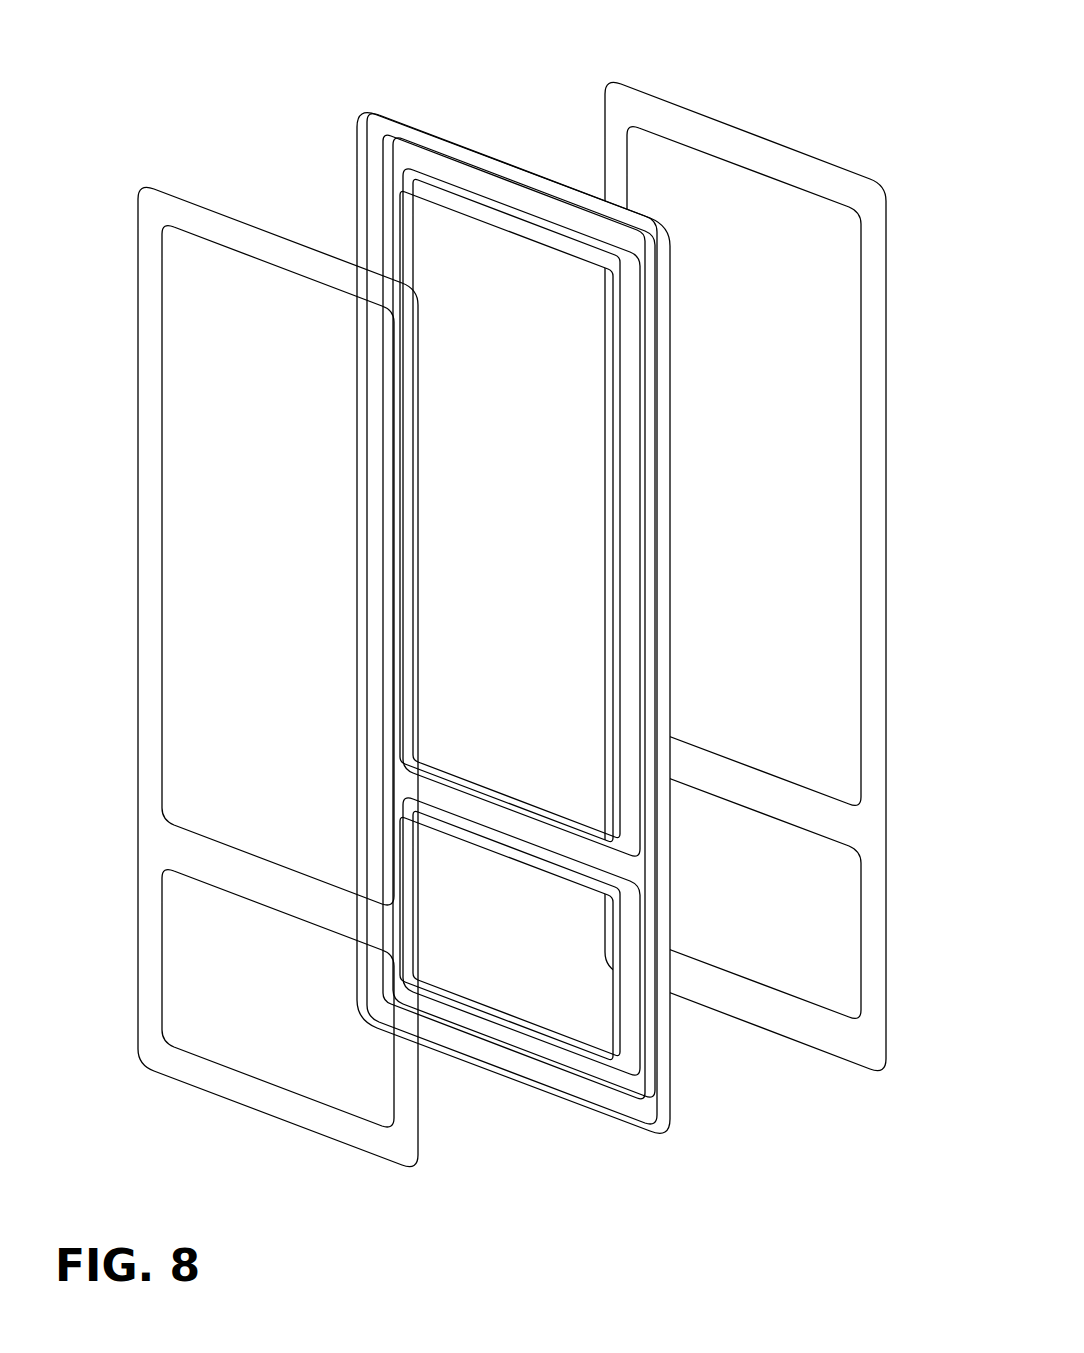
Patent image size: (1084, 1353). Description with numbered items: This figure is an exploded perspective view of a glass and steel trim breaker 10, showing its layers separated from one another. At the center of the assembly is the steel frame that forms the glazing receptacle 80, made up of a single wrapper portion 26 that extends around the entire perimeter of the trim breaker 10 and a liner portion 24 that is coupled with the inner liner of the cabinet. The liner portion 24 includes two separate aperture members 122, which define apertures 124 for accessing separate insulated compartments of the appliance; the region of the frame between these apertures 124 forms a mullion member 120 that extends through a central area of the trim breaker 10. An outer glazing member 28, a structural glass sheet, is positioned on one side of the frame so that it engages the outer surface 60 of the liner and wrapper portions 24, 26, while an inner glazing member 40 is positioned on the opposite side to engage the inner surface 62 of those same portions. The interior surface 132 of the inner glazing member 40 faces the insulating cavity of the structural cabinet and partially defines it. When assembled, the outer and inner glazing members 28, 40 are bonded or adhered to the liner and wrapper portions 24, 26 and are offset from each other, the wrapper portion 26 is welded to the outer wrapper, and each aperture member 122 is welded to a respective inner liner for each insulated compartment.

The trim breaker 10 is at (425, 62).
The liner portion 24 is at (545, 250).
The wrapper portion 26 is at (410, 118).
The outer glazing member 28 is at (783, 576).
The inner glazing member 40 is at (231, 676).
The outer surface 60 is at (446, 588).
The inner surface 62 is at (382, 165).
The glazing receptacle 80 is at (678, 423).
The mullion member 120 is at (235, 838).
The aperture members 122 is at (520, 512).
The apertures 124 is at (545, 1012).
The interior surface 132 is at (150, 615).